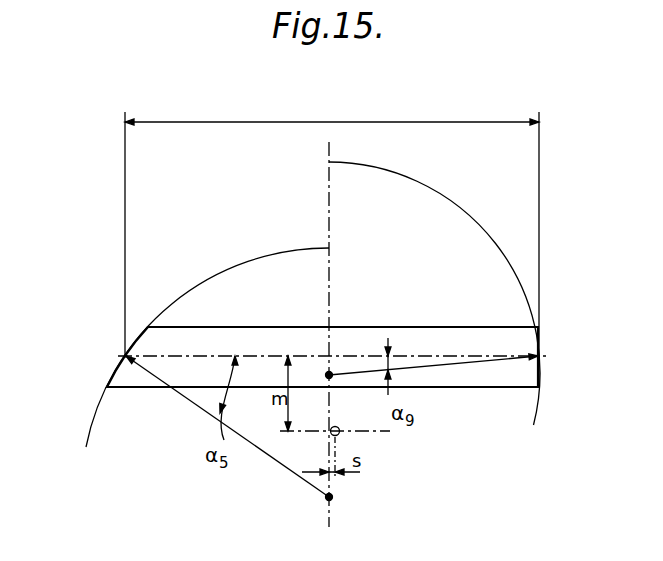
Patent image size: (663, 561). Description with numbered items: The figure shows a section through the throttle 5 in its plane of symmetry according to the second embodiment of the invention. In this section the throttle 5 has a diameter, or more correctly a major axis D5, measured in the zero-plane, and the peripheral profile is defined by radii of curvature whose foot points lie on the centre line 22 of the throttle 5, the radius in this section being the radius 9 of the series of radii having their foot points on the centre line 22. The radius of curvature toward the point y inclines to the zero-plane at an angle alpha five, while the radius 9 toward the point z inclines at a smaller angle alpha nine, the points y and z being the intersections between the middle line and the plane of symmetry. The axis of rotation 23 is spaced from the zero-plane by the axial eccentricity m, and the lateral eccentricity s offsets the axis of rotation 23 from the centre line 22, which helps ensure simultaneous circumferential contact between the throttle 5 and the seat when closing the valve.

The centre line 22 is at (329, 513).
The axis of rotation 23 is at (340, 434).
The throttle 5 is at (266, 456).
The radius R9 line 9 is at (438, 369).
The major axis D5 is at (332, 240).
The point y is at (126, 356).
The point z is at (540, 356).